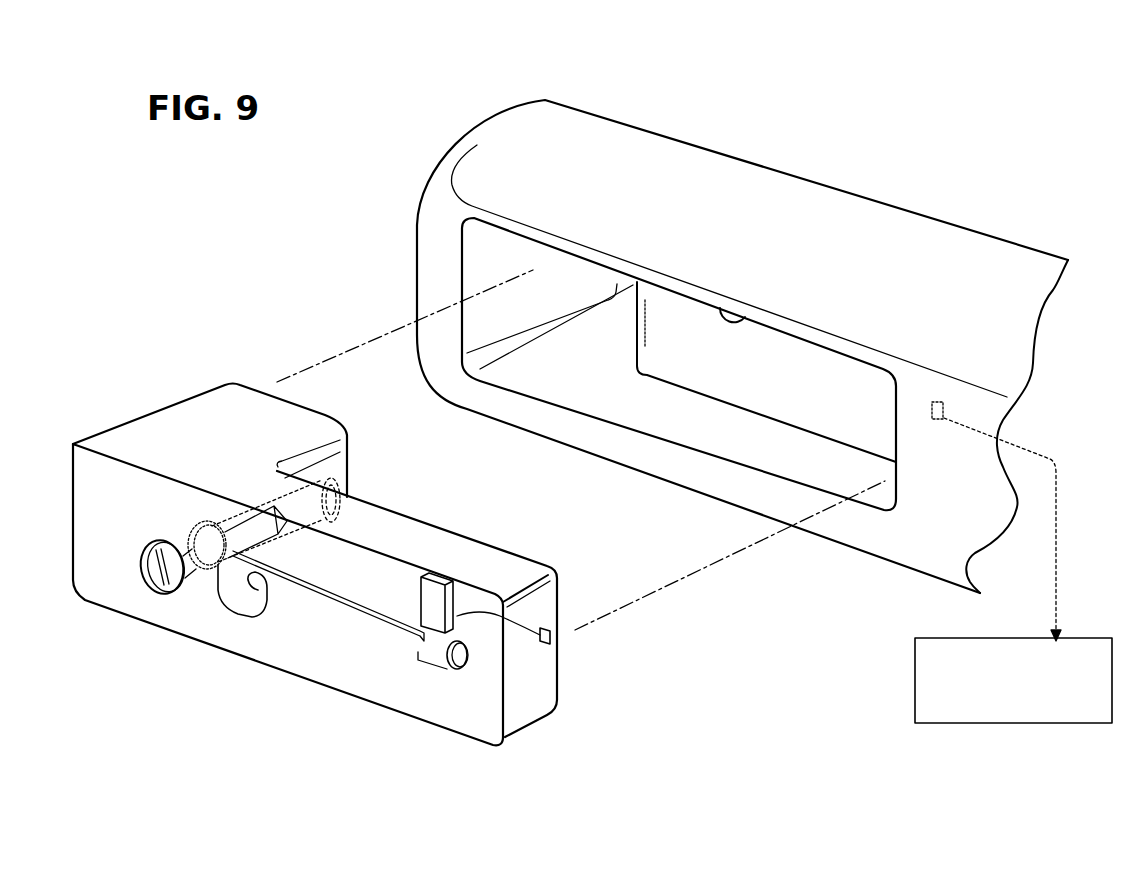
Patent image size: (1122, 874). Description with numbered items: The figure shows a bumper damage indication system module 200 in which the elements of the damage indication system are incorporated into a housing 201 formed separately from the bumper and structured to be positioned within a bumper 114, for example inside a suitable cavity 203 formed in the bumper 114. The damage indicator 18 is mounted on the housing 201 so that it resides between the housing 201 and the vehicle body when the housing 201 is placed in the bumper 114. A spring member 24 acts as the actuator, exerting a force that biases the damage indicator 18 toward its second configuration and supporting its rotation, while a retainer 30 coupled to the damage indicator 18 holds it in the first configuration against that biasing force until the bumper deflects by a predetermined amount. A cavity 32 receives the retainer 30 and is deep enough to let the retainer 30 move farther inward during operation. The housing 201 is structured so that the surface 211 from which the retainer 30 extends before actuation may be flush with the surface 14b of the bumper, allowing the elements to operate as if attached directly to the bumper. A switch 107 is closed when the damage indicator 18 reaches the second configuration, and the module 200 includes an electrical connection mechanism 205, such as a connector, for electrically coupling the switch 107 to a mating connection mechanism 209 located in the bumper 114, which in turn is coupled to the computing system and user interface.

The surface of the bumper 14b is at (440, 277).
The bumper 114 is at (553, 185).
The cavity 203 is at (743, 320).
The mating connection mechanism 209 is at (936, 402).
The bumper damage indication system module 200 is at (165, 441).
The housing 201 is at (233, 410).
The surface 211 is at (403, 690).
The retainer 30 is at (197, 573).
The cavity 32 is at (335, 522).
The damage indicator 18 is at (327, 600).
The spring member 24 is at (413, 653).
The switch 107 is at (425, 598).
The electrical connection mechanism 205 is at (552, 638).